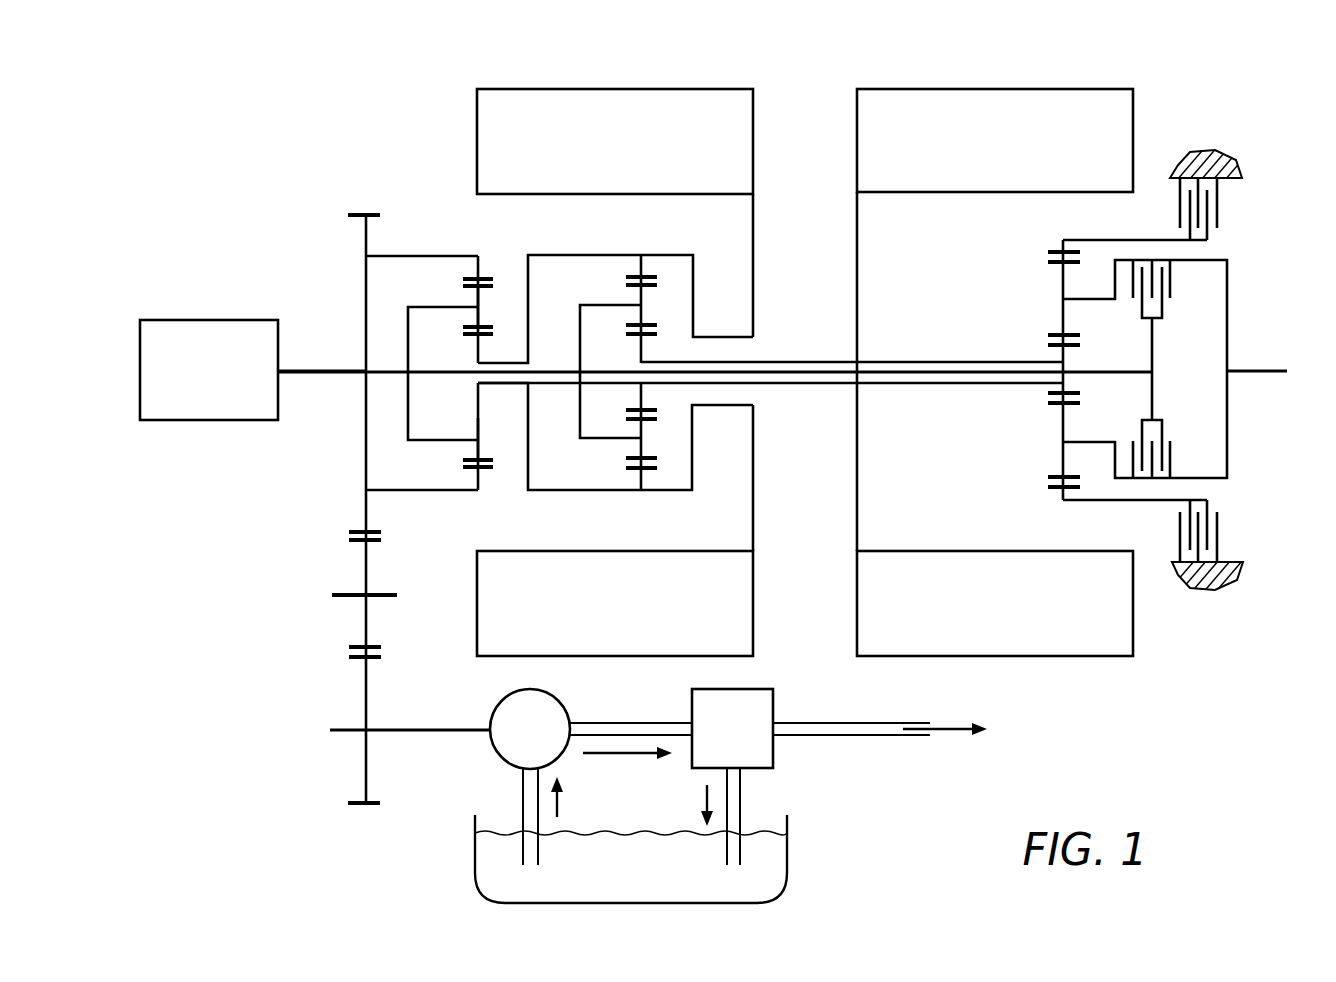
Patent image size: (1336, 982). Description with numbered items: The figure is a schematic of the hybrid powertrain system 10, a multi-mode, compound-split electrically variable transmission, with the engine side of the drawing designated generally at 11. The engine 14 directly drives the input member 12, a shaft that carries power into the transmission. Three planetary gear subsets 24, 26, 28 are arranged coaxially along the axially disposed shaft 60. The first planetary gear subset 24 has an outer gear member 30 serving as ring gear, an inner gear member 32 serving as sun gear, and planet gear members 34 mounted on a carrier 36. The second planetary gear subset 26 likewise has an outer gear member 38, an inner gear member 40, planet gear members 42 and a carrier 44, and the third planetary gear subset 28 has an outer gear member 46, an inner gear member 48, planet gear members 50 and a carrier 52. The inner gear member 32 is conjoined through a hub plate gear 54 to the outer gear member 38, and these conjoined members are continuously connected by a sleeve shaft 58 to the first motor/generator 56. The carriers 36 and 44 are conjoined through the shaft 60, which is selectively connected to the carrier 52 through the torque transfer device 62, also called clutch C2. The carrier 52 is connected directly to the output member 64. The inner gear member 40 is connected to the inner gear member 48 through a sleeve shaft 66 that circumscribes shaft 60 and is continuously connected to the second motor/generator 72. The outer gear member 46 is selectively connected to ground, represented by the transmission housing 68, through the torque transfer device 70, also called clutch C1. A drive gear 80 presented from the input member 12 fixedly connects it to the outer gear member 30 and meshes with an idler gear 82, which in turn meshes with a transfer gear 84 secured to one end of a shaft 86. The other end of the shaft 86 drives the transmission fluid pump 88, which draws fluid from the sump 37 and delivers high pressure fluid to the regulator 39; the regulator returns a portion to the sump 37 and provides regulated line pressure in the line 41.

The hybrid powertrain system 10 is at (803, 75).
The input member / engine connection 11 is at (315, 250).
The input member 12 is at (313, 367).
The engine 14 is at (209, 370).
The first planetary gear subset 24 is at (437, 240).
The second planetary gear subset 26 is at (652, 258).
The third planetary gear subset 28 is at (1005, 270).
The outer gear member 30 is at (483, 275).
The inner gear member 32 is at (482, 338).
The planet gear members 34 is at (473, 298).
The carrier 36 is at (407, 398).
The outer gear member 38 is at (633, 272).
The inner gear member 40 is at (633, 404).
The planet gear members 42 is at (647, 314).
The carrier 44 is at (580, 422).
The outer gear member 46 is at (1057, 248).
The inner gear member 48 is at (1073, 393).
The planet gear members 50 is at (1062, 320).
The carrier 52 is at (1222, 262).
The hub plate gear 54 is at (559, 372).
The first motor/generator 56 is at (615, 372).
The sleeve shaft 58 is at (733, 337).
The shaft 60 is at (798, 361).
The torque transfer device 62 is at (1192, 306).
The output member 64 is at (1250, 368).
The sleeve shaft 66 is at (885, 358).
The transmission housing 68 is at (1208, 160).
The torque transfer device 70 is at (1237, 197).
The second motor/generator 72 is at (995, 372).
The drive gear 80 is at (364, 427).
The idler gear 82 is at (364, 628).
The transfer gear 84 is at (364, 690).
The shaft 86 is at (383, 735).
The transmission fluid pump 88 is at (543, 710).
The regulator 39 is at (774, 750).
The line 41 is at (883, 732).
The sump 37 is at (787, 842).
The first clutch C1 is at (1159, 547).
The second clutch C2 is at (1195, 451).